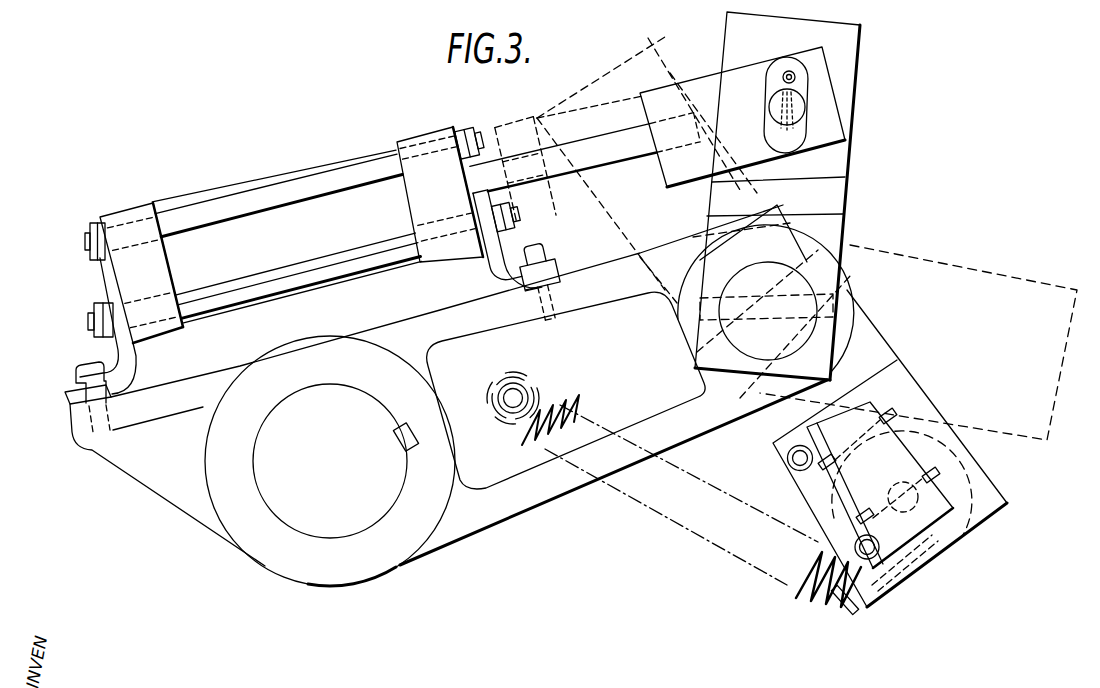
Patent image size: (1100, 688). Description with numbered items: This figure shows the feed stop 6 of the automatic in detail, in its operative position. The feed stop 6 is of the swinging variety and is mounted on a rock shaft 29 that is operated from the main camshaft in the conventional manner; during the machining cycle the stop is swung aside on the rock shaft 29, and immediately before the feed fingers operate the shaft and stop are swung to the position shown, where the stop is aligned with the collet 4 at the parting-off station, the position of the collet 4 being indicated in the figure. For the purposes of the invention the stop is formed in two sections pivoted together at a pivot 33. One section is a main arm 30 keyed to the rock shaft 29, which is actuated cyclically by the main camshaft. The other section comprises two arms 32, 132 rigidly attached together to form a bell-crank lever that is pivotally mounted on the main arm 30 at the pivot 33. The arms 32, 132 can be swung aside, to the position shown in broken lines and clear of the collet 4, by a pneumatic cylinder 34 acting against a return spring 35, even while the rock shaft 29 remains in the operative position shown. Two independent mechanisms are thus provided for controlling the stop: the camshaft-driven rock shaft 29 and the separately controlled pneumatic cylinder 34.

The collet 4 is at (960, 492).
The feed stop 6 is at (341, 151).
The rock shaft 29 is at (270, 498).
The main arm 30 is at (527, 497).
The arm 32 is at (641, 49).
The pivot 33 is at (783, 273).
The pneumatic cylinder 34 is at (237, 224).
The return spring 35 is at (790, 584).
The arm 132 is at (937, 288).